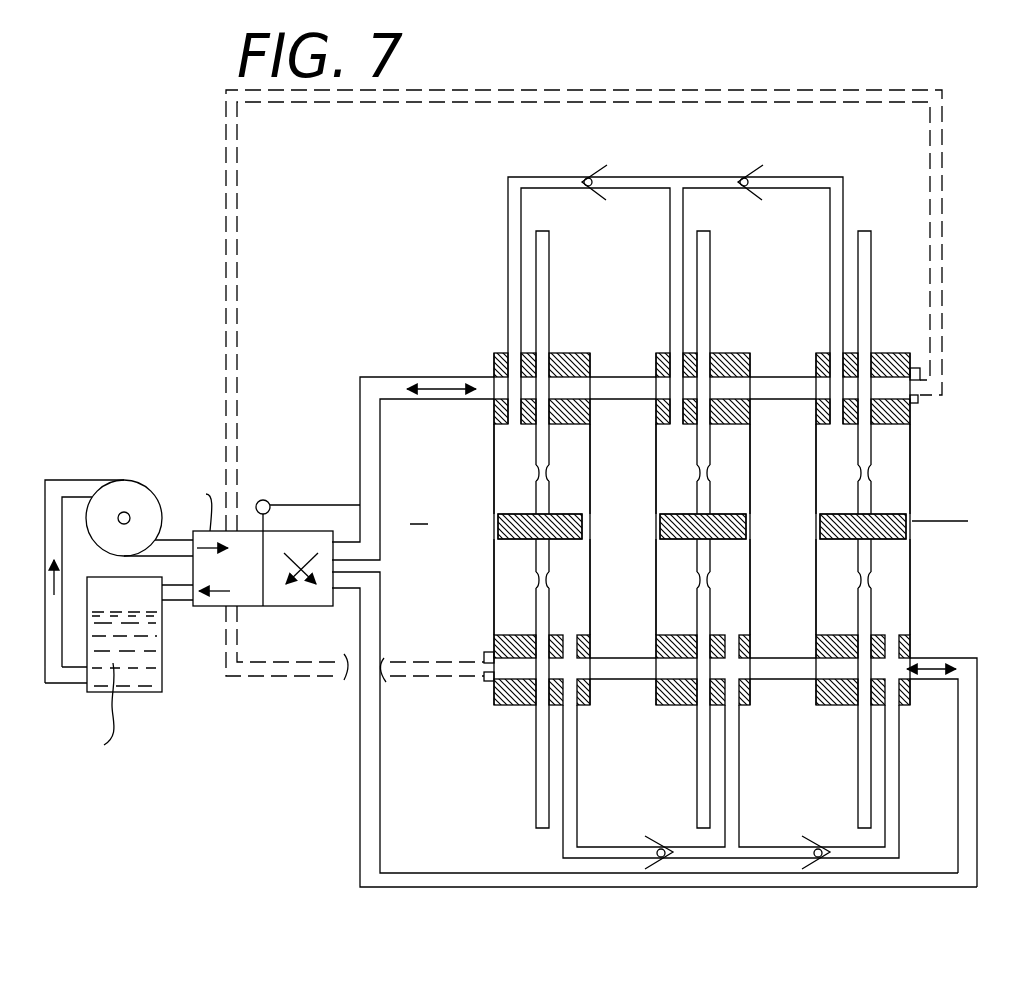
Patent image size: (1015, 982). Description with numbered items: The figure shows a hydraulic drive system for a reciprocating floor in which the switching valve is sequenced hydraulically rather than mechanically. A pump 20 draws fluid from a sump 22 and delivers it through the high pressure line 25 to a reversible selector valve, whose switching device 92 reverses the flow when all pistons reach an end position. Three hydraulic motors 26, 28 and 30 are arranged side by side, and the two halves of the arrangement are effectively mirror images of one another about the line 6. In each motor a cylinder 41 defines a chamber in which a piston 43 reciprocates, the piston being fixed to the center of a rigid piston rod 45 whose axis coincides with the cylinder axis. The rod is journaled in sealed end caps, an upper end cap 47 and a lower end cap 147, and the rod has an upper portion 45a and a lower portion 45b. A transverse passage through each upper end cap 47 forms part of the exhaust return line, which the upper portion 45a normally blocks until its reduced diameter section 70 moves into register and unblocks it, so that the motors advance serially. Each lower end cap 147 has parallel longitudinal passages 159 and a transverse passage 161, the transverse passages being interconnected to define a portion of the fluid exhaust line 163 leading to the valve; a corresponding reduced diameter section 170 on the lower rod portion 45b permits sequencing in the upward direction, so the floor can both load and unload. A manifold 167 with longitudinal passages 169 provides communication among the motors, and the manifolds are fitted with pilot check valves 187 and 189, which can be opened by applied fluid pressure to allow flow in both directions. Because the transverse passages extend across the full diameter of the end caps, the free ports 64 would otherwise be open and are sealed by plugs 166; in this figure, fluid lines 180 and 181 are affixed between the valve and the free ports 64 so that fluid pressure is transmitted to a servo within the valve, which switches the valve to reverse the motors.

The line 6— 6 is at (689, 522).
The pump 20 is at (126, 480).
The sump 22 is at (162, 672).
The high pressure line 25 is at (170, 540).
The hydraulic motor 26 is at (490, 586).
The hydraulic motor 28 is at (654, 586).
The hydraulic motor 30 is at (814, 586).
The cylinder 41 is at (494, 468).
The piston 43 is at (498, 526).
The piston rod 45 is at (536, 566).
The upper portion of the rod 45a is at (549, 276).
The piston rod 45b is at (536, 786).
The end cap 47 is at (578, 353).
The free port 64 is at (920, 373).
The reduced diameter section 70 is at (536, 473).
The switching device 92 is at (295, 495).
The end cap 147 is at (494, 705).
The longitudinal passage 159 is at (578, 705).
The transverse passage 161 is at (810, 680).
The fluid exhaust line 163 is at (958, 802).
The plug 166 is at (917, 403).
The manifold 167 is at (668, 896).
The longitudinal passage 169 is at (577, 770).
The reduced diameter section 170 is at (549, 580).
The fluid line 180 is at (831, 89).
The fluid line 181 is at (292, 677).
The pilot check valve 187 is at (591, 177).
The pilot check valve 189 is at (746, 177).